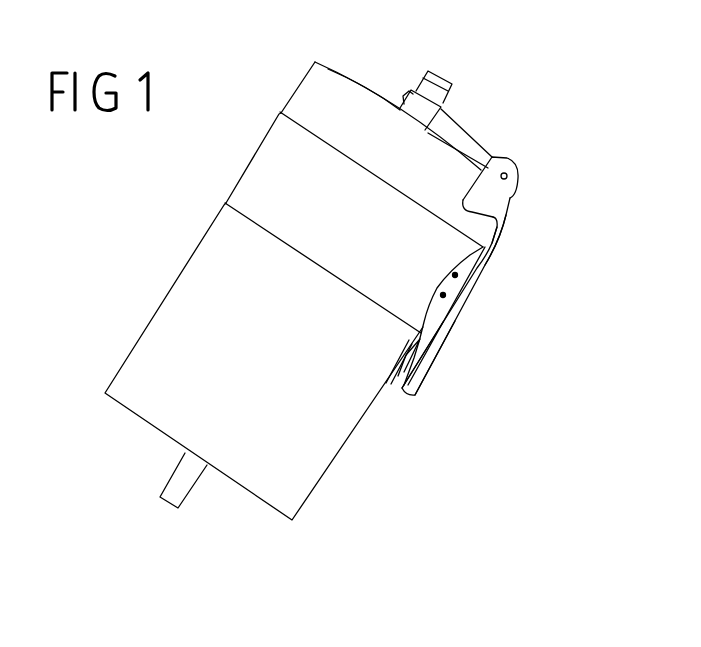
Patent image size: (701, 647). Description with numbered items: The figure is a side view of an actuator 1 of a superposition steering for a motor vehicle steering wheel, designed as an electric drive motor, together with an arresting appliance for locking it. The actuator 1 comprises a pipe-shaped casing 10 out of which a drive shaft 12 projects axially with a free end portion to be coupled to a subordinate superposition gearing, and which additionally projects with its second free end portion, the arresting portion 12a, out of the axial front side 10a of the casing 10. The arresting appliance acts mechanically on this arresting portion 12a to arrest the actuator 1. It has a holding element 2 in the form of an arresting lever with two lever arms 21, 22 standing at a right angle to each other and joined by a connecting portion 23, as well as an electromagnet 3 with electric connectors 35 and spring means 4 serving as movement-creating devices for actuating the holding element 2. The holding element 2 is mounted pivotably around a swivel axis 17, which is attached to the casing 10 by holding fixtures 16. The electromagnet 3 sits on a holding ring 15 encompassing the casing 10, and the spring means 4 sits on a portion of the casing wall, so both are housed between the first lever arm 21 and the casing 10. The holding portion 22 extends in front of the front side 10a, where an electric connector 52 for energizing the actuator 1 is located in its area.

The actuator 1 is at (141, 318).
The casing 10 is at (132, 375).
The axial front side 10a is at (343, 76).
The drive shaft 12 is at (172, 495).
The arresting portion 12a is at (438, 82).
The holding ring 15 is at (260, 183).
The electric connector 52 is at (410, 108).
The lever arm (holding portion) 22 is at (458, 138).
The holding fixture 16 is at (481, 198).
The swivel axis 17 is at (512, 176).
The connecting portion 23 is at (502, 222).
The holding element 2 is at (506, 242).
The first lever arm 21 is at (448, 332).
The electromagnet 3 is at (452, 287).
The electric connectors 35 is at (455, 275).
The spring means 4 is at (397, 383).